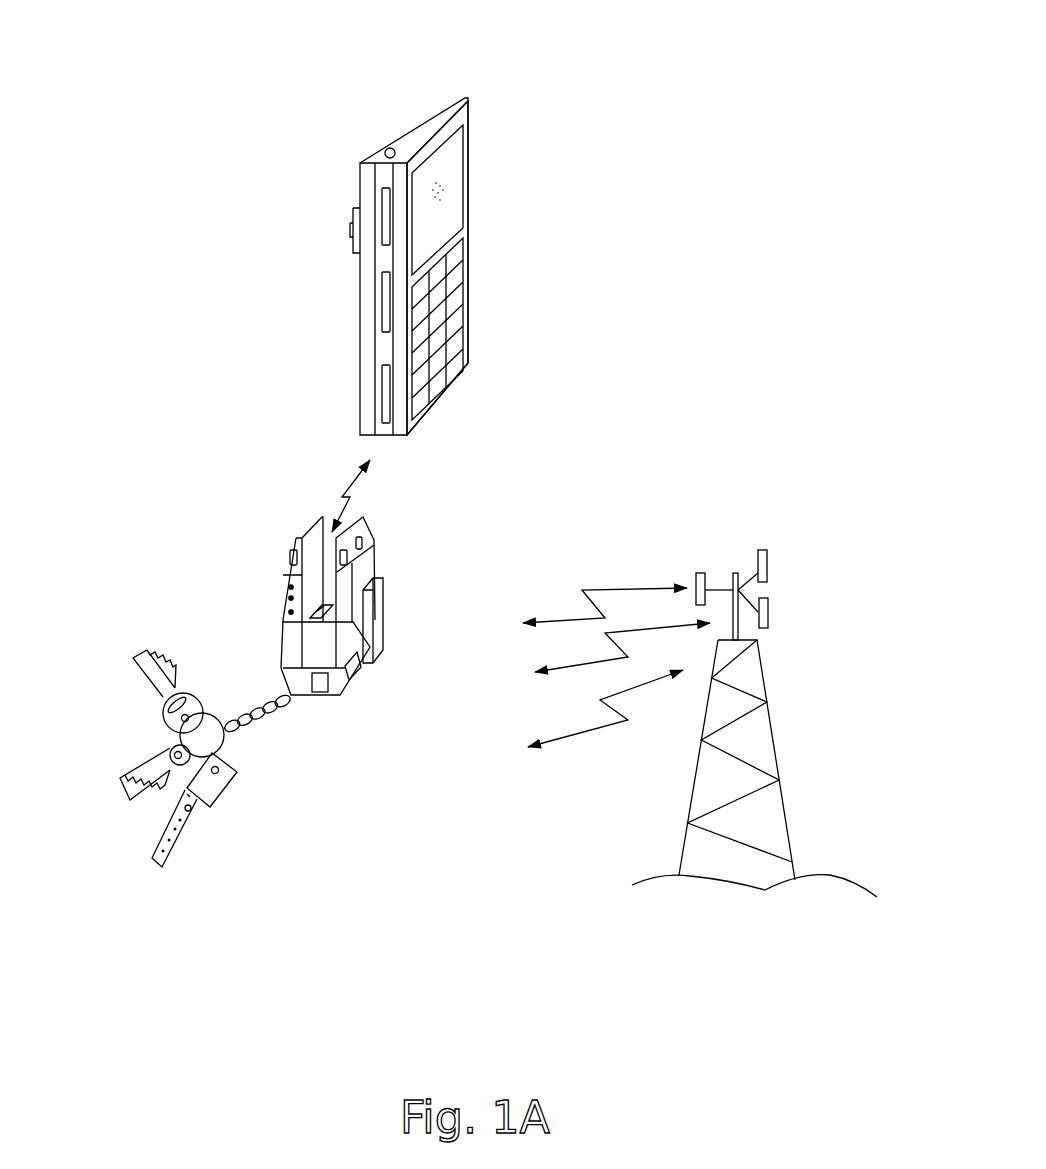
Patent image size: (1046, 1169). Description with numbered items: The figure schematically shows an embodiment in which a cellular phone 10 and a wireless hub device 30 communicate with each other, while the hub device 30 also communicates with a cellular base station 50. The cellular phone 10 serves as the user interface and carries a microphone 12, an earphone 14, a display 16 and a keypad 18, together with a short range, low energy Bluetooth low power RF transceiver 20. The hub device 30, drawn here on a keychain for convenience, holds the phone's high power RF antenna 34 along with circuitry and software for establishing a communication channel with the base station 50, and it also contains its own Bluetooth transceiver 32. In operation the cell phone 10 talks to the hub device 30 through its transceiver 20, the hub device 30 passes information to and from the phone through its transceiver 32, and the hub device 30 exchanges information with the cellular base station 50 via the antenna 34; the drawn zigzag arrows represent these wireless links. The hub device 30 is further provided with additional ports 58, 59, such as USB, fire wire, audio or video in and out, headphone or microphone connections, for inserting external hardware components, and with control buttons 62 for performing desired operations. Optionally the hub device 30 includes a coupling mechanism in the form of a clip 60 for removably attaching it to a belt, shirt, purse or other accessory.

The cellular phone 10 is at (436, 222).
The microphone 12 is at (440, 392).
The earphone 14 is at (438, 137).
The display 16 is at (453, 193).
The keypad 18 is at (458, 300).
The Bluetooth low power RF transceiver 20 is at (384, 394).
The wireless hub device 30 is at (325, 613).
The Bluetooth transceiver 32 is at (319, 686).
The antenna 34 is at (294, 540).
The cellular base station 50 is at (767, 730).
The port 58 is at (356, 676).
The ports 59 is at (290, 598).
The clip 60 is at (385, 608).
The control buttons 62 is at (288, 560).